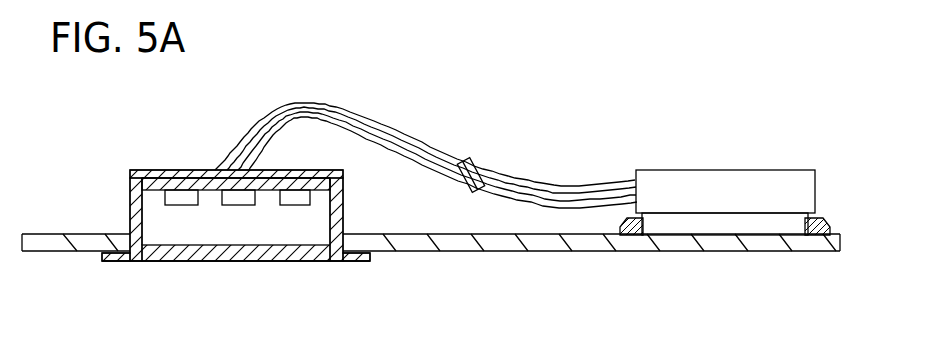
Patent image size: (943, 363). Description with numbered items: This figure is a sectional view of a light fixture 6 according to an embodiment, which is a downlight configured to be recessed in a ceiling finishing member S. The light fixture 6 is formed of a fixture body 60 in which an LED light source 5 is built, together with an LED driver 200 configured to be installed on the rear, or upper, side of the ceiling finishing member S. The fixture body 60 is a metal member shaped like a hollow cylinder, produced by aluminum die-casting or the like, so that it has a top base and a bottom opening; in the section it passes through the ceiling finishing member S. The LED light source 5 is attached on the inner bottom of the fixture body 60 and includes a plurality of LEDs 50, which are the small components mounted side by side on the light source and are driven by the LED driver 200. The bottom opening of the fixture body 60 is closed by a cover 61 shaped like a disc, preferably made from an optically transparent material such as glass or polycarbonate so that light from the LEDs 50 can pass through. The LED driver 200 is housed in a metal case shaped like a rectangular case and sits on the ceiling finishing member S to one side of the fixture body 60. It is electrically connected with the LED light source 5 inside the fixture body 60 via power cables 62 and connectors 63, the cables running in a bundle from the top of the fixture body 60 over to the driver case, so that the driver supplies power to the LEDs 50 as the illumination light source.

The LED light source 5 is at (320, 200).
The light fixture 6 is at (308, 265).
The LEDs 50 is at (293, 205).
The fixture body 60 is at (122, 200).
The cover 61 is at (163, 252).
The power cables 62 is at (381, 124).
The connectors 63 is at (478, 168).
The LED driver 200 is at (724, 162).
The ceiling finishing member S is at (585, 246).